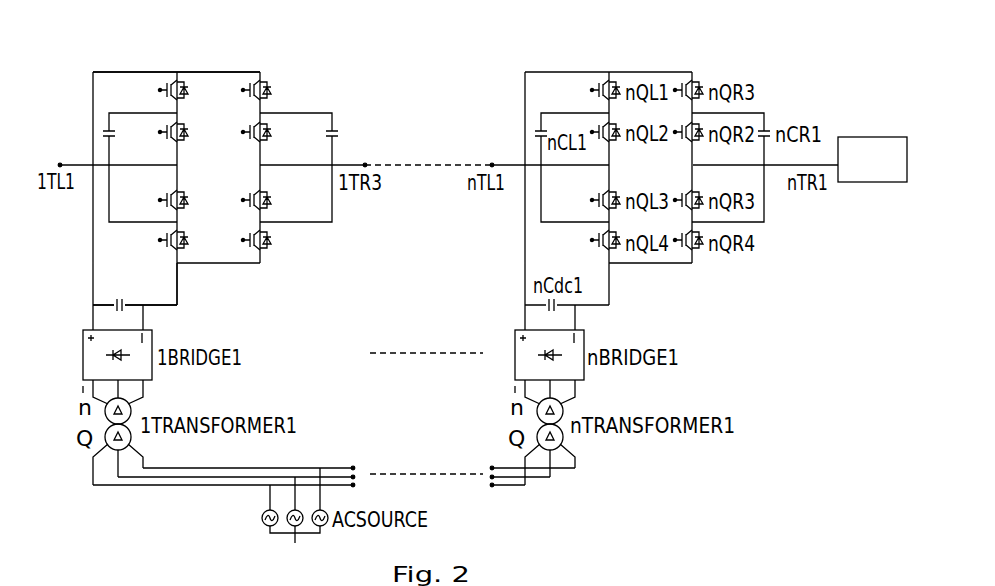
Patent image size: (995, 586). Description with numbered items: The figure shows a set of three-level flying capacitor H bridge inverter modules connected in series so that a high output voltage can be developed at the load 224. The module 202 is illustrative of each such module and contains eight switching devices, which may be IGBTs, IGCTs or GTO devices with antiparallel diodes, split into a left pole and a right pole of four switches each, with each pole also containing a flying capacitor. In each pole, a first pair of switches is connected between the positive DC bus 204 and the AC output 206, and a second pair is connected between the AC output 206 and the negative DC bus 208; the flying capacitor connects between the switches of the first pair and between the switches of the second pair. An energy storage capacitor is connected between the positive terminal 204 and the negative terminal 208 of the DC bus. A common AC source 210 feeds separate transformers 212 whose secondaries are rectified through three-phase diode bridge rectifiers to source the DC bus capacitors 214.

The module 202 is at (239, 167).
The positive DC bus 204 is at (113, 72).
The AC output 206 is at (347, 163).
The negative DC bus 208 is at (178, 287).
The common AC source 210 is at (262, 518).
The transformers 212 is at (131, 437).
The DC bus capacitors 214 is at (152, 378).
The load 224 is at (850, 137).